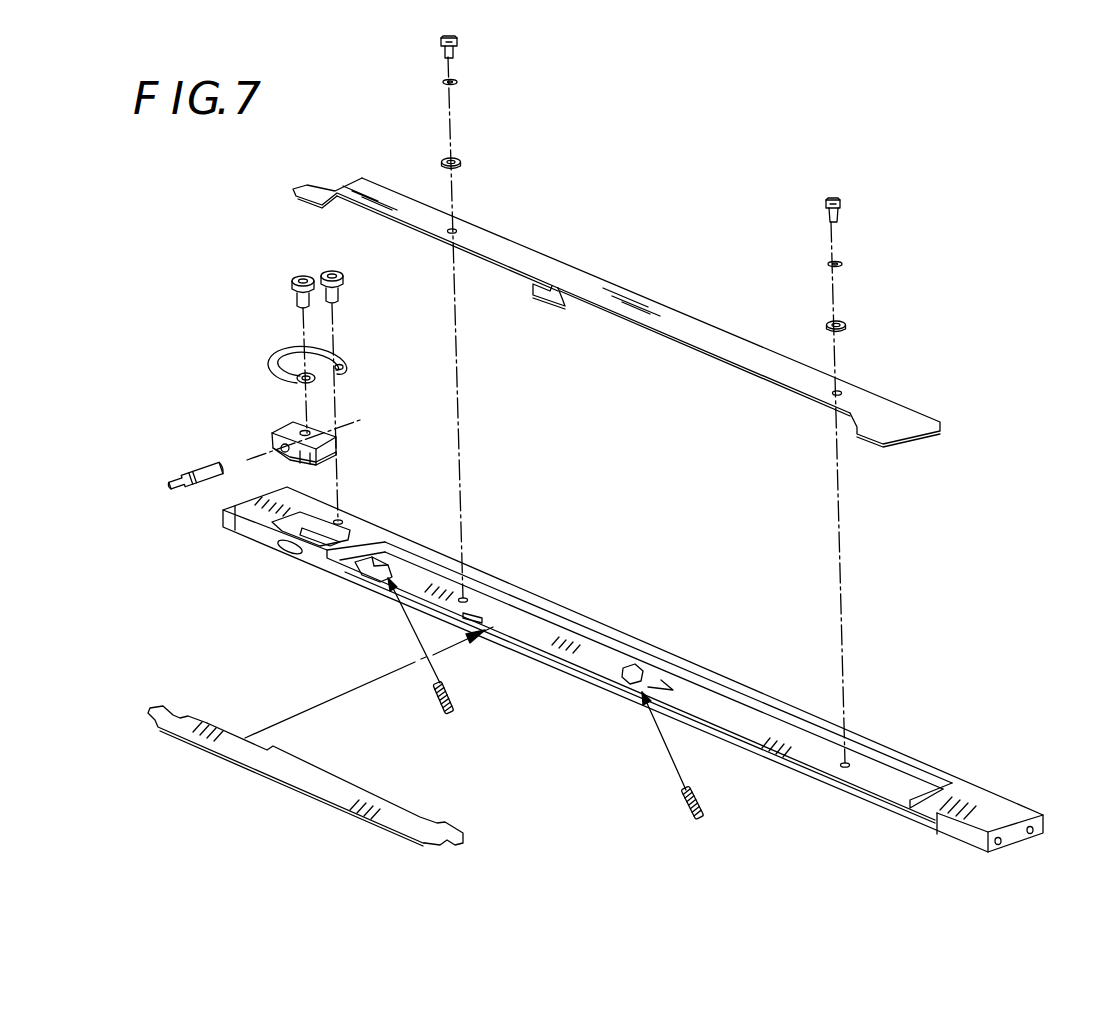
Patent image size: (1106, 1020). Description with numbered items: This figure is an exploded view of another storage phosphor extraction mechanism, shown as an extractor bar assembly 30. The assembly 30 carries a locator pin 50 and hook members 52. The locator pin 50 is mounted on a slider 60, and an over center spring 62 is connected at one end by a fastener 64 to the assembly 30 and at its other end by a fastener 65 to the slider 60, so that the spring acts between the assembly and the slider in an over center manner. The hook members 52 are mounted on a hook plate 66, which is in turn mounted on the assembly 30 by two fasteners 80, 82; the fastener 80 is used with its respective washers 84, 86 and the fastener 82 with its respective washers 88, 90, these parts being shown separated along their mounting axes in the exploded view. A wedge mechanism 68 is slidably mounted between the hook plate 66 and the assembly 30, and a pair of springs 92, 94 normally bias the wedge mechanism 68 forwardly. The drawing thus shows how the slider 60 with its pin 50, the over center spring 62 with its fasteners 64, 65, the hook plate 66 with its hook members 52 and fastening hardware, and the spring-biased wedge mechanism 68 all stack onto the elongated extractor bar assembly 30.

The extractor bar assembly 30 is at (907, 755).
The locator pin 50 is at (198, 483).
The hook members 52 is at (548, 308).
The slider 60 is at (275, 428).
The over center spring 62 is at (285, 352).
The fastener 64 is at (332, 271).
The fastener 65 is at (292, 281).
The hook plate 66 is at (645, 312).
The wedge mechanism 68 is at (297, 775).
The fastener 80 is at (458, 44).
The fastener 82 is at (841, 210).
The washer 84 is at (458, 82).
The washer 86 is at (462, 164).
The washer 88 is at (843, 264).
The washer 90 is at (845, 324).
The spring 92 is at (452, 712).
The spring 94 is at (700, 816).